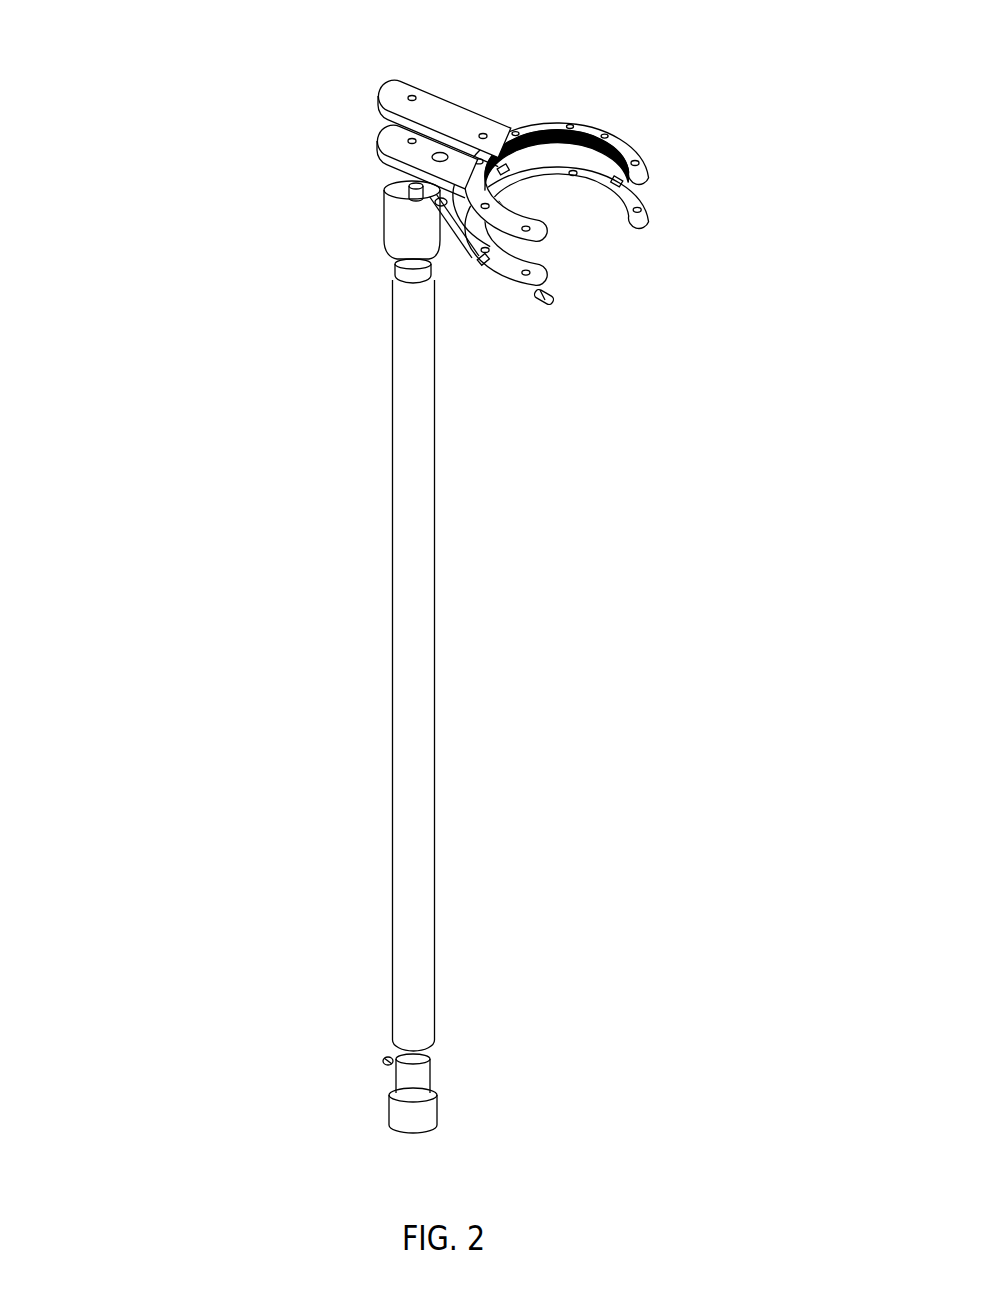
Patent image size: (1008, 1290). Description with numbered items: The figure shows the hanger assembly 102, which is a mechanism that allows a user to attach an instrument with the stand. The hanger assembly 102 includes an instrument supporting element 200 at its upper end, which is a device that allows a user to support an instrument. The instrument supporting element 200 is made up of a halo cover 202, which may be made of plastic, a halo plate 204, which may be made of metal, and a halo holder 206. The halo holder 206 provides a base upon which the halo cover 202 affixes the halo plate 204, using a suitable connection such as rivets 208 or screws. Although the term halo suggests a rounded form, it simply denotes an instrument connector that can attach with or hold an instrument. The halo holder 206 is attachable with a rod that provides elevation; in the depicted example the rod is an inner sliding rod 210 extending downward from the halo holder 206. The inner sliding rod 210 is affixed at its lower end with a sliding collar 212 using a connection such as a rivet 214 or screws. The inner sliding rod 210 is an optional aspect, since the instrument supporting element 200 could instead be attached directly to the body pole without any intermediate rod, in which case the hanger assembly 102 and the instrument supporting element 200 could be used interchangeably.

The hanger assembly 102 is at (72, 41).
The instrument supporting element 200 is at (743, 56).
The halo cover 202 is at (651, 178).
The halo plate 204 is at (378, 153).
The halo holder 206 is at (382, 229).
The rivet 208 is at (556, 302).
The inner sliding rod 210 is at (438, 653).
The sliding collar 212 is at (388, 1097).
The rivet 214 is at (385, 1061).